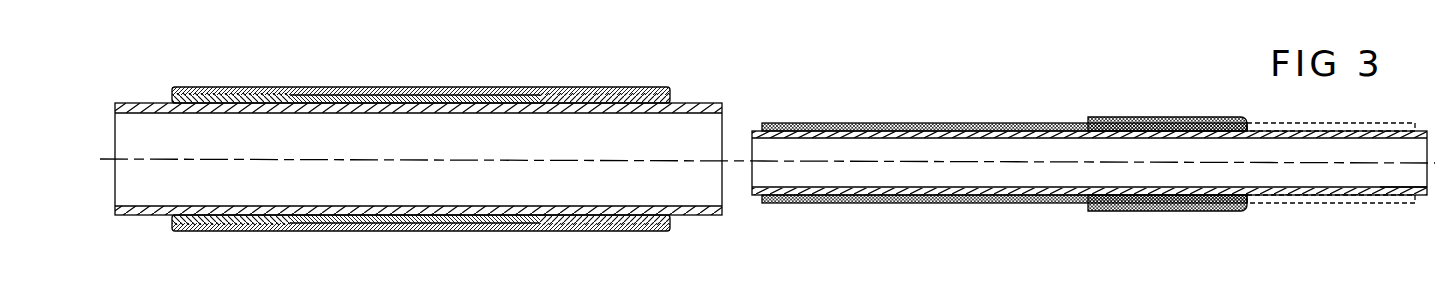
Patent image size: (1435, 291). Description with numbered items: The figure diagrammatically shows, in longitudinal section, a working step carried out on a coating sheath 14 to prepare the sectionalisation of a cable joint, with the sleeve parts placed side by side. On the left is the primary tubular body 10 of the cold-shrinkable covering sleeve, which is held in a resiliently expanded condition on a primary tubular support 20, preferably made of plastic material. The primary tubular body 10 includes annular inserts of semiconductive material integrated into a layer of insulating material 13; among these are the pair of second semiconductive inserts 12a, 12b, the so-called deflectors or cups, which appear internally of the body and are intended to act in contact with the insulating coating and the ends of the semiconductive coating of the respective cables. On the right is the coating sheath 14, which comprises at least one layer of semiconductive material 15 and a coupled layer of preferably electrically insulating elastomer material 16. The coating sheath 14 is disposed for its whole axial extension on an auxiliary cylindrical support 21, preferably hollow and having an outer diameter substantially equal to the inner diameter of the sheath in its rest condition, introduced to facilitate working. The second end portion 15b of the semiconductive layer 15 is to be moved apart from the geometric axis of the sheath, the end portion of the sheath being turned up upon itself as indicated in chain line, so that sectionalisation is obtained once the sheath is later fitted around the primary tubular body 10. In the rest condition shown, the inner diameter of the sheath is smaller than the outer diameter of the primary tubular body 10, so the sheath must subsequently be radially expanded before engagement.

The primary tubular body 10 is at (467, 85).
The second semiconductive insert 12a is at (207, 233).
The second semiconductive insert 12b is at (632, 88).
The layer of insulating material 13 is at (382, 88).
The coating sheath 14 is at (762, 124).
The layer of semiconductive material 15 is at (938, 124).
The second end portion 15b is at (1138, 117).
The layer of elastomer material 16 is at (867, 124).
The primary tubular support 20 is at (130, 103).
The auxiliary cylindrical support 21 is at (1425, 180).